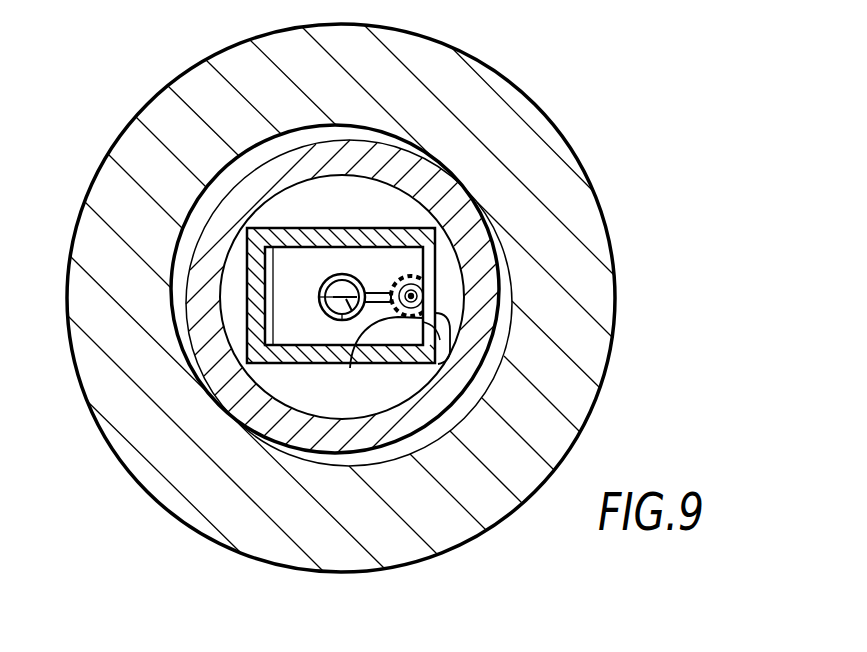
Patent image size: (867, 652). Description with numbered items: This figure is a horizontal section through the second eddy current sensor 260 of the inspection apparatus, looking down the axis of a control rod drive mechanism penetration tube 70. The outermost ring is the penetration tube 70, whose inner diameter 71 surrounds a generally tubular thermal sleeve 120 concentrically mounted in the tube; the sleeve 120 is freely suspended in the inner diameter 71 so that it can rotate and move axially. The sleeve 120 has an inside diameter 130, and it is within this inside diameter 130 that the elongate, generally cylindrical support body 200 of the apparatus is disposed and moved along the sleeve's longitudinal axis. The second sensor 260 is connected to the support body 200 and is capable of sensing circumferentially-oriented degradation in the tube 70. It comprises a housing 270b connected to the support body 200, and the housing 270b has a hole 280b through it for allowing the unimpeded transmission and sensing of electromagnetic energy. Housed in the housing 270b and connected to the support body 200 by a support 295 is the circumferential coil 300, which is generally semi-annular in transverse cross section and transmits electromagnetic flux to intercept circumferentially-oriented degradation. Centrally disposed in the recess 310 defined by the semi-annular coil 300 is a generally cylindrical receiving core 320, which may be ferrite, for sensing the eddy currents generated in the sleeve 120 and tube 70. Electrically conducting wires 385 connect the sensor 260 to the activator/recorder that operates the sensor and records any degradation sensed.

The control rod drive mechanism penetration tube 70 is at (170, 140).
The inner diameter 71 is at (205, 203).
The thermal sleeve 120 is at (215, 355).
The inside diameter 130 is at (230, 313).
The second eddy current sensor 260 is at (273, 227).
The housing 270b is at (342, 227).
The support body 200 is at (318, 298).
The support 295 is at (381, 291).
The electrically conducting wires 385 is at (336, 318).
The recess 310 is at (425, 280).
The receiving core 320 is at (425, 308).
The circumferential coil 300 is at (350, 368).
The hole 280b is at (440, 364).